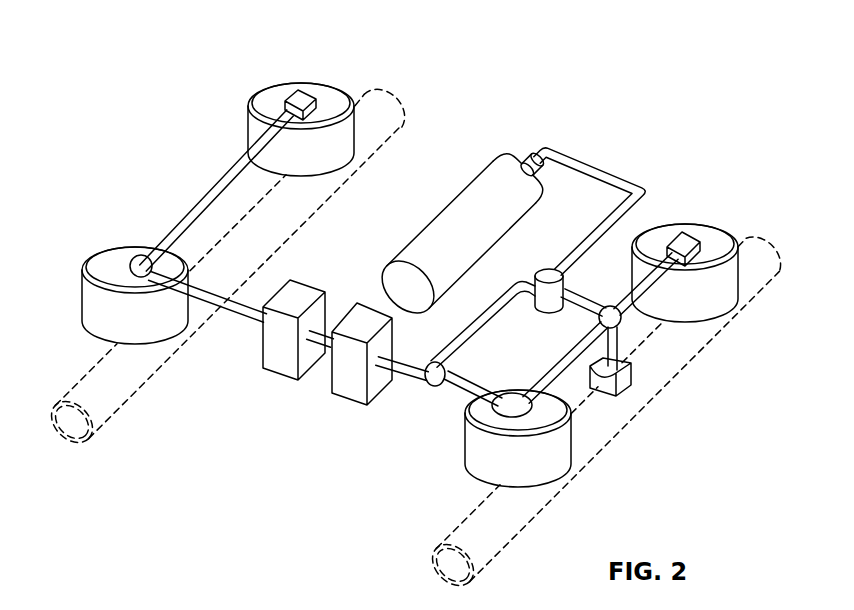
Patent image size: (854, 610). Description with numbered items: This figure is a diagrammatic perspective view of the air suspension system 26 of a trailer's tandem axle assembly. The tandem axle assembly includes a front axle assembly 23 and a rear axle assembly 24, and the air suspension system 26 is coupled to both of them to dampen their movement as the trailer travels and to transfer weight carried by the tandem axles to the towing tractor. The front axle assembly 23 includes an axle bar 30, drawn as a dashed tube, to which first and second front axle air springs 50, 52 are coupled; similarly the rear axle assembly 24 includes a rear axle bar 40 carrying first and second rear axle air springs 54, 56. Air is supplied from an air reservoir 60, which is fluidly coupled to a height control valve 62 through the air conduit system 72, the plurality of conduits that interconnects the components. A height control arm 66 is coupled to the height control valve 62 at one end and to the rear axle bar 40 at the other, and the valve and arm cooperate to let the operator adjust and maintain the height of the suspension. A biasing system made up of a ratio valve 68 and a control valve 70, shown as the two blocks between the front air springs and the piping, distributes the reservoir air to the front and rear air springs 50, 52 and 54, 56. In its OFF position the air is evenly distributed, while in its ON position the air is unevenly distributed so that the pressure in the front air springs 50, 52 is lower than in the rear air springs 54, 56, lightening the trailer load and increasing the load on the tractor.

The front axle assembly 23 is at (192, 178).
The rear axle assembly 24 is at (581, 317).
The air suspension system 26 is at (204, 190).
The axle bar 30 is at (383, 100).
The rear axle bar 40 is at (773, 245).
The first front axle air spring 50 is at (270, 103).
The second front axle air spring 52 is at (97, 310).
The first rear axle air spring 54 is at (709, 239).
The second rear axle air spring 56 is at (481, 452).
The air reservoir 60 is at (488, 170).
The height control valve 62 is at (578, 278).
The height control arm 66 is at (580, 282).
The ratio valve 68 is at (277, 350).
The control valve 70 is at (345, 378).
The air conduit system 72 is at (180, 196).